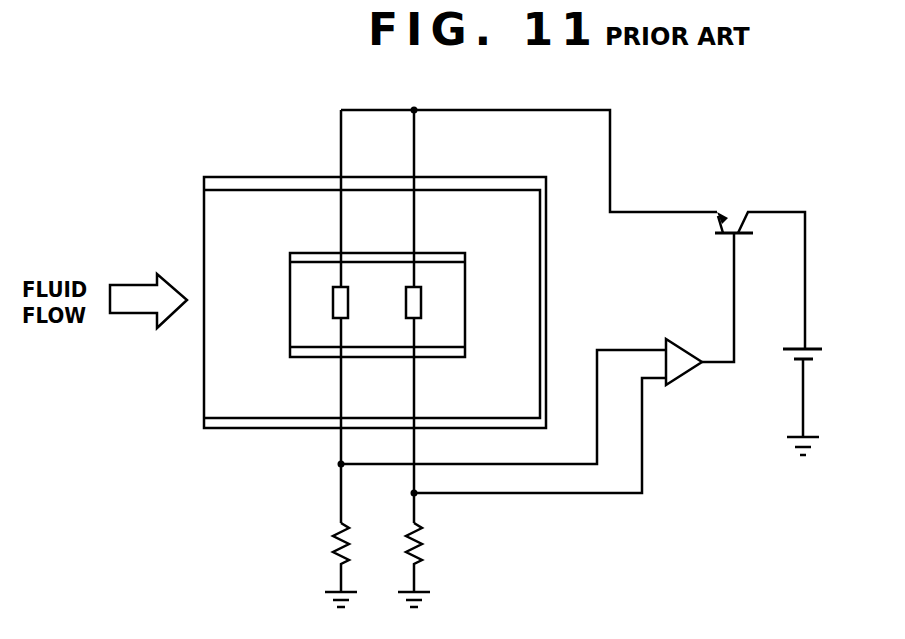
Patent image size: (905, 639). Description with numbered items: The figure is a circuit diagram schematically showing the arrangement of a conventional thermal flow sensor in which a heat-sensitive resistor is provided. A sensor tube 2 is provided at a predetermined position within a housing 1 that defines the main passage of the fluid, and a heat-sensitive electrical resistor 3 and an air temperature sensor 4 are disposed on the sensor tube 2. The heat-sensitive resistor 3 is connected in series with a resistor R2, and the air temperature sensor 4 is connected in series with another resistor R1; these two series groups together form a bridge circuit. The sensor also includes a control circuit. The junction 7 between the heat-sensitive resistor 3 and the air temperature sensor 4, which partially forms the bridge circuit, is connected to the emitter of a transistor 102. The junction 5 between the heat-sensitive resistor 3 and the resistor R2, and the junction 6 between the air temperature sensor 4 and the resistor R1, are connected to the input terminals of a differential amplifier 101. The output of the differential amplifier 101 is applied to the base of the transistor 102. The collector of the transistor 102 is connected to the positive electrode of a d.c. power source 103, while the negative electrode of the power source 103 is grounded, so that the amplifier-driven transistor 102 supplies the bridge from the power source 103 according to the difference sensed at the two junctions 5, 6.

The housing 1 is at (236, 177).
The sensor tube 2 is at (300, 253).
The heat-sensitive electrical resistor 3 is at (382, 298).
The air temperature sensor 4 is at (421, 306).
The junction 5 is at (341, 464).
The junction 6 is at (414, 493).
The junction 7 is at (414, 110).
The resistor R1 is at (426, 565).
The resistor R2 is at (353, 565).
The differential amplifier 101 is at (688, 372).
The transistor 102 is at (728, 218).
The d.c. power source 103 is at (822, 349).